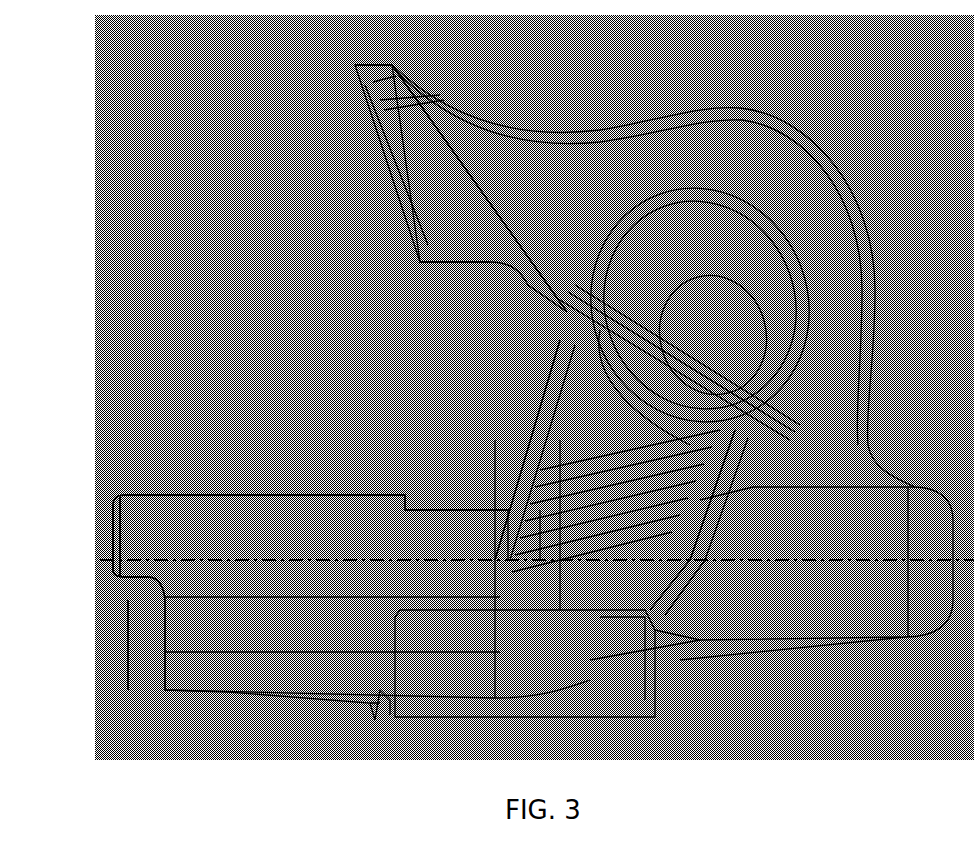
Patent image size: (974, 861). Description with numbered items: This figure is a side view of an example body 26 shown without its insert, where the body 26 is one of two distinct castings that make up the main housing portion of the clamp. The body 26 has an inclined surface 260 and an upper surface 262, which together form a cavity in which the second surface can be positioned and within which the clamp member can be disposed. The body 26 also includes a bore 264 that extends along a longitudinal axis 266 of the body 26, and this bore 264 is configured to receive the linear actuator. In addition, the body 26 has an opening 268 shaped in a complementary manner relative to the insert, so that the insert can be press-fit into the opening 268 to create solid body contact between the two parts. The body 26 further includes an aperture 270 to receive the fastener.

The body 26 is at (295, 112).
The inclined surface 260 is at (387, 182).
The upper surface 262 is at (323, 490).
The bore 264 is at (173, 615).
The longitudinal axis 266 is at (172, 545).
The opening 268 is at (607, 455).
The aperture 270 is at (717, 333).